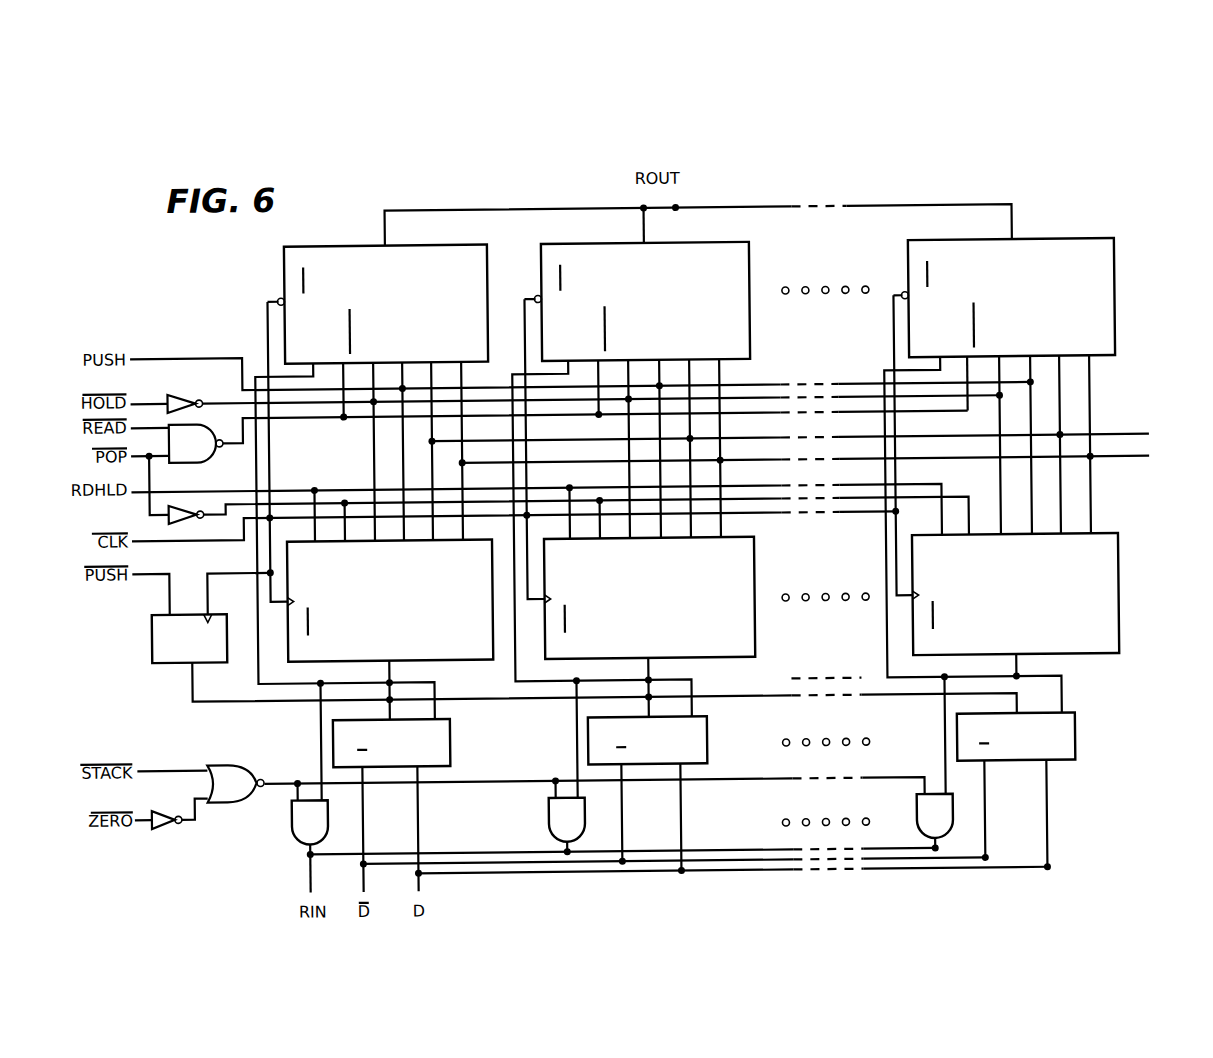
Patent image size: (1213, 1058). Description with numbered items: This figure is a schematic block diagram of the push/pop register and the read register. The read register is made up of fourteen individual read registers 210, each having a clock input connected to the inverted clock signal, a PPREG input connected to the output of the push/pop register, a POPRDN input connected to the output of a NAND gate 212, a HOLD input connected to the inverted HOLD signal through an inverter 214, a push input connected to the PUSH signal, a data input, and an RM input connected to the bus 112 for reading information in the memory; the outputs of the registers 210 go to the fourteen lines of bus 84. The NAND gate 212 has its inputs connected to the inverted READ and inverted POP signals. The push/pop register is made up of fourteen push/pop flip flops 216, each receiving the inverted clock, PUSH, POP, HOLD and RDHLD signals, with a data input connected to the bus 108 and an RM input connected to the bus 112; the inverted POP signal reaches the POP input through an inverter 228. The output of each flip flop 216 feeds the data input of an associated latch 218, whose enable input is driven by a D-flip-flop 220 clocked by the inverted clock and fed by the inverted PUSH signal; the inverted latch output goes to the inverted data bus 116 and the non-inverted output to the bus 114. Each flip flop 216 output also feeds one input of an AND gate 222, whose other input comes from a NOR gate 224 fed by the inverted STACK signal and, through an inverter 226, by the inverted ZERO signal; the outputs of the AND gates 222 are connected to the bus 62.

The bus 62 is at (305, 880).
The bus 84 is at (679, 209).
The bus 108 is at (1102, 438).
The bus 112 is at (1102, 463).
The bus 114 is at (413, 880).
The inverted data bus 116 is at (359, 880).
The read register 210 is at (546, 245).
The NAND gate 212 is at (205, 458).
The inverter 214 is at (181, 391).
The push/pop flip flop 216 is at (457, 659).
The latch 218 is at (448, 750).
The D-flip-flop 220 is at (151, 635).
The AND gate 222 is at (289, 836).
The NOR gate 224 is at (222, 798).
The inverter 226 is at (162, 824).
The inverter 228 is at (187, 518).